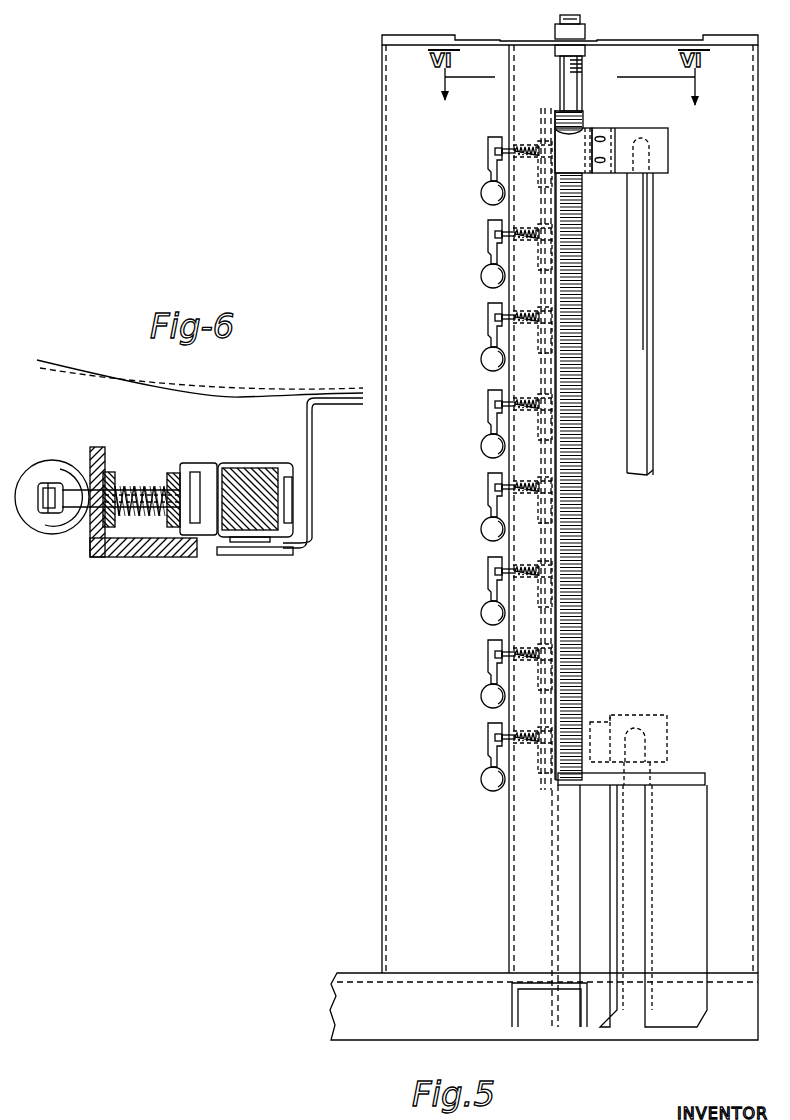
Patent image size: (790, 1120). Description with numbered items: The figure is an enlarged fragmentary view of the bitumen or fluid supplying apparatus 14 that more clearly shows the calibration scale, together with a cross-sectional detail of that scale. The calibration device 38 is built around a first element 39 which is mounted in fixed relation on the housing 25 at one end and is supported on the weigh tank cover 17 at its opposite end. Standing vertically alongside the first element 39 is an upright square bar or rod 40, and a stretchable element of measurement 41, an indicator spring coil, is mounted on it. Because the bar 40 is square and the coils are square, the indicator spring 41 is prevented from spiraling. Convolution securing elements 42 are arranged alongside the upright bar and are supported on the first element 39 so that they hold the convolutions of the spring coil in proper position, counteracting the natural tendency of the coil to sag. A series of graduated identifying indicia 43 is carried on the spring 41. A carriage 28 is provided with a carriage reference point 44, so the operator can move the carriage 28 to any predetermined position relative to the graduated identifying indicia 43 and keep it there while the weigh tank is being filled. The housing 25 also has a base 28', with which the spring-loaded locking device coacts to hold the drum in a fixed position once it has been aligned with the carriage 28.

In FIG. 5, the bitumen or fluid supplying apparatus 14 is at (380, 215).
In FIG. 5, the tank cover 17 is at (398, 1019).
In FIG. 6, the housing 25 is at (238, 396).
In FIG. 5, the carriage 28 is at (653, 301).
In FIG. 5, the base 28' is at (620, 868).
In FIG. 5, the calibration device 38 is at (586, 455).
In FIG. 6, the calibration device 38 is at (243, 460).
In FIG. 5, the first element 39 is at (509, 290).
In FIG. 6, the first element 39 is at (127, 548).
In FIG. 5, the upright square bar or rod 40 is at (573, 100).
In FIG. 6, the upright square bar or rod 40 is at (253, 512).
In FIG. 5, the stretchable element of measurement 41 is at (572, 220).
In FIG. 6, the stretchable element of measurement 41 is at (277, 465).
In FIG. 5, the convolution securing elements 42 is at (487, 612).
In FIG. 6, the convolution securing elements 42 is at (55, 525).
In FIG. 6, the graduated identifying indicia 43 is at (253, 548).
In FIG. 5, the carriage reference point 44 is at (584, 128).